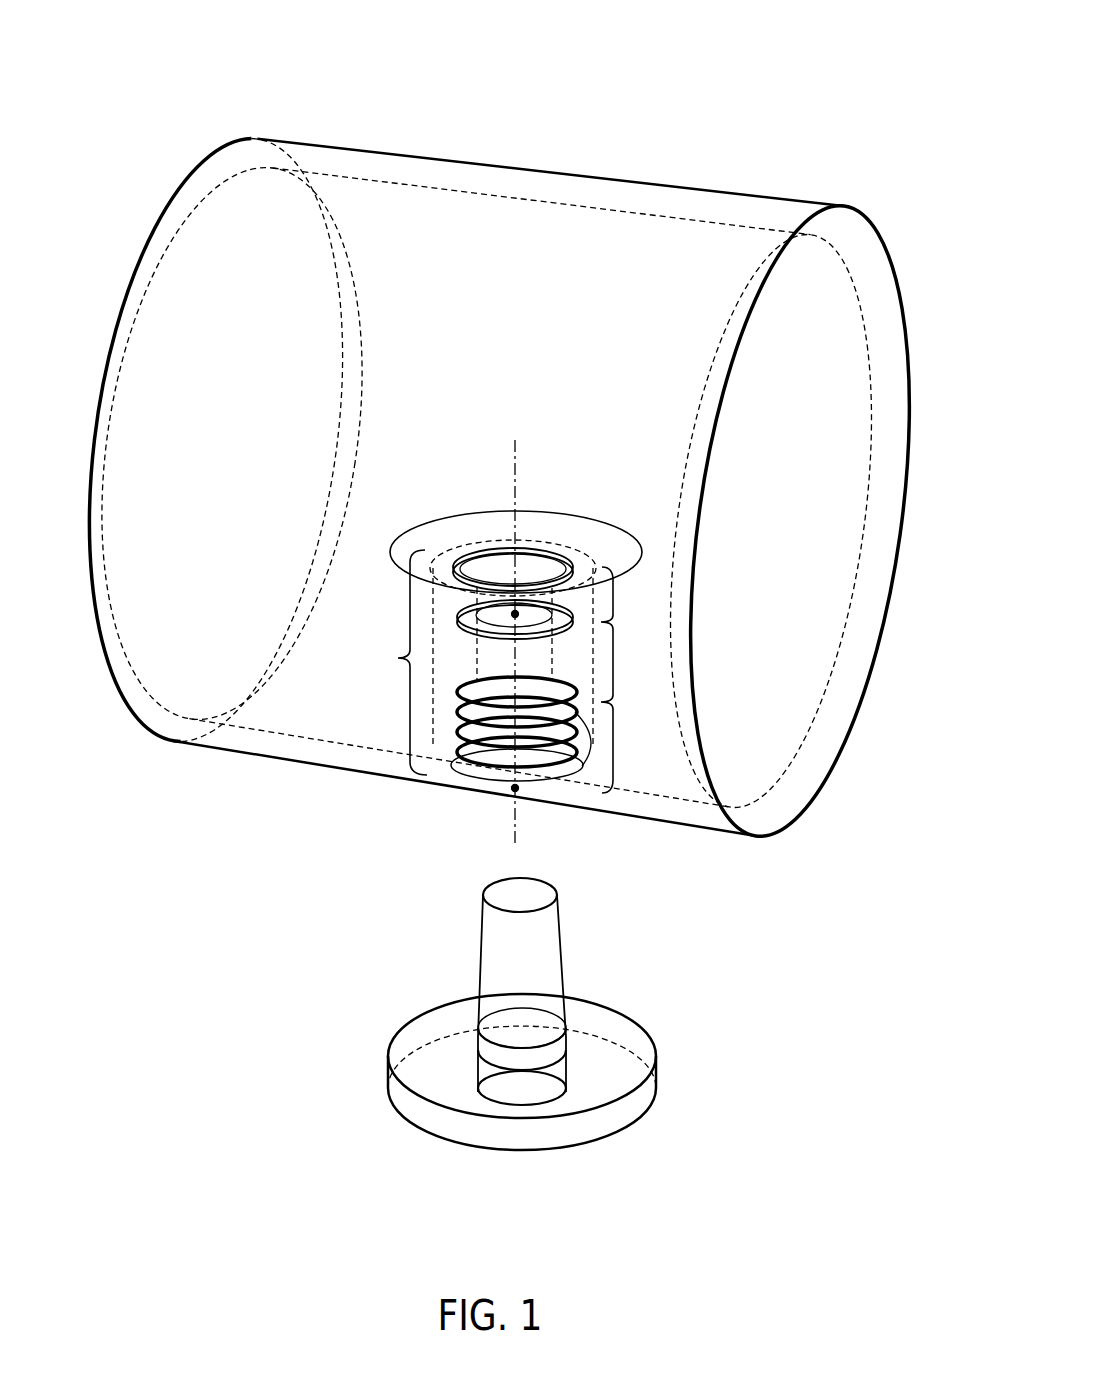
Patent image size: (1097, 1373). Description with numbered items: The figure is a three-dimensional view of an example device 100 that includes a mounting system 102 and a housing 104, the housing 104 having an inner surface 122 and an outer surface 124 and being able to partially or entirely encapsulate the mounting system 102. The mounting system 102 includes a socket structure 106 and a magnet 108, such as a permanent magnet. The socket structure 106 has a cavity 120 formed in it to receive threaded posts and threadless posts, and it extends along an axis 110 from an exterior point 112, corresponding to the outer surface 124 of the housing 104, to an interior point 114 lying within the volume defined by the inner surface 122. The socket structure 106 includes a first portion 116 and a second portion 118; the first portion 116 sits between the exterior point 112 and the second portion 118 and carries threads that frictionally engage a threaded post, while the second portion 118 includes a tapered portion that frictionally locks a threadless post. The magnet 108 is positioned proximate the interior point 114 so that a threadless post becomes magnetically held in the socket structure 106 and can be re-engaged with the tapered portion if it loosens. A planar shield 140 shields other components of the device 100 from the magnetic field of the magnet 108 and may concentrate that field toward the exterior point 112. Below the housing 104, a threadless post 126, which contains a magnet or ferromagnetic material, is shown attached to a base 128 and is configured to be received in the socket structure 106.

The device 100 is at (790, 42).
The mounting system 102 is at (396, 658).
The housing 104 is at (528, 169).
The socket structure 106 is at (460, 543).
The magnet 108 is at (613, 590).
The axis 110 is at (521, 486).
The exterior point 112 is at (515, 788).
The interior point 114 is at (515, 614).
The first portion 116 is at (613, 743).
The second portion 118 is at (613, 660).
The cavity 120 is at (505, 656).
The inner surface 122 is at (172, 700).
The outer surface 124 is at (136, 731).
The threadless post 126 is at (560, 937).
The base 128 is at (605, 998).
The shield 140 is at (574, 512).